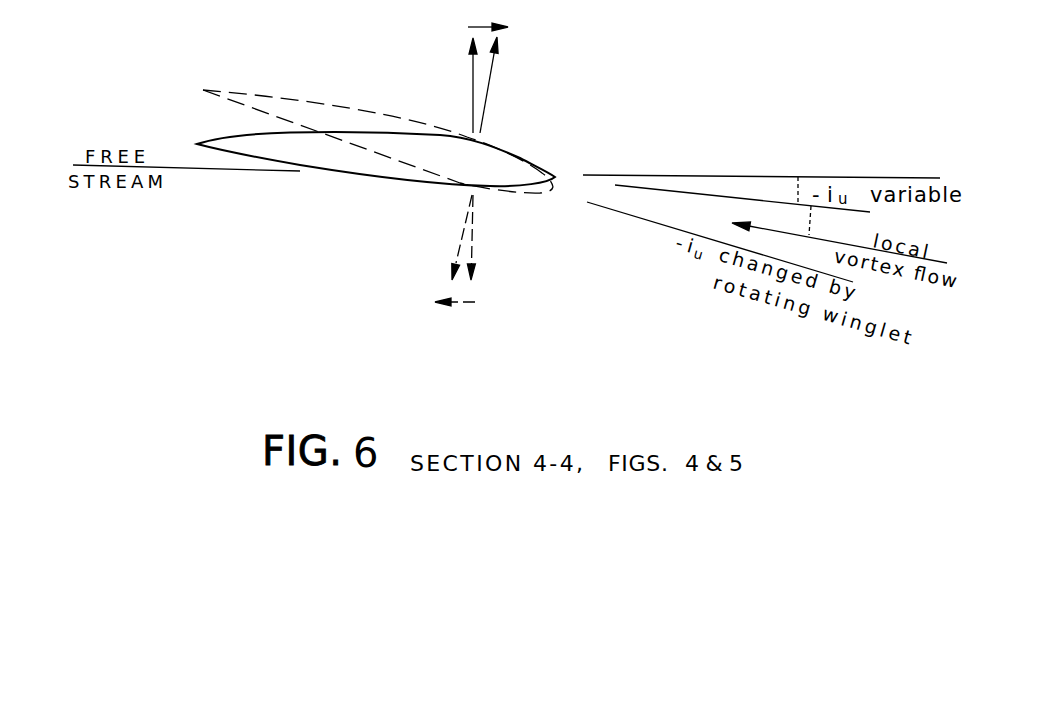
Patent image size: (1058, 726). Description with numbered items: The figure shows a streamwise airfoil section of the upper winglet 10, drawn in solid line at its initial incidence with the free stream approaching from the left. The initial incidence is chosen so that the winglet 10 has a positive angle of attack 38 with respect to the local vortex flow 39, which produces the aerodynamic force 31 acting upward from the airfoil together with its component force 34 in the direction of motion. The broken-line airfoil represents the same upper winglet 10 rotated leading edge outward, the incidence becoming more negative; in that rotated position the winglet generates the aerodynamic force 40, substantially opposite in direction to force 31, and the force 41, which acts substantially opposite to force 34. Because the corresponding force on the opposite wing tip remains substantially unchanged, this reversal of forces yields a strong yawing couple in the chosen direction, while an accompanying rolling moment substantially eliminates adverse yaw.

The upper winglet 10 is at (330, 170).
The aerodynamic force 31 is at (503, 85).
The force component in direction of motion 34 is at (488, 15).
The positive angle of attack 38 is at (821, 207).
The local vortex flow 39 is at (823, 236).
The aerodynamic force (rotated winglet) 40 is at (450, 237).
The reversed force component 41 is at (455, 316).